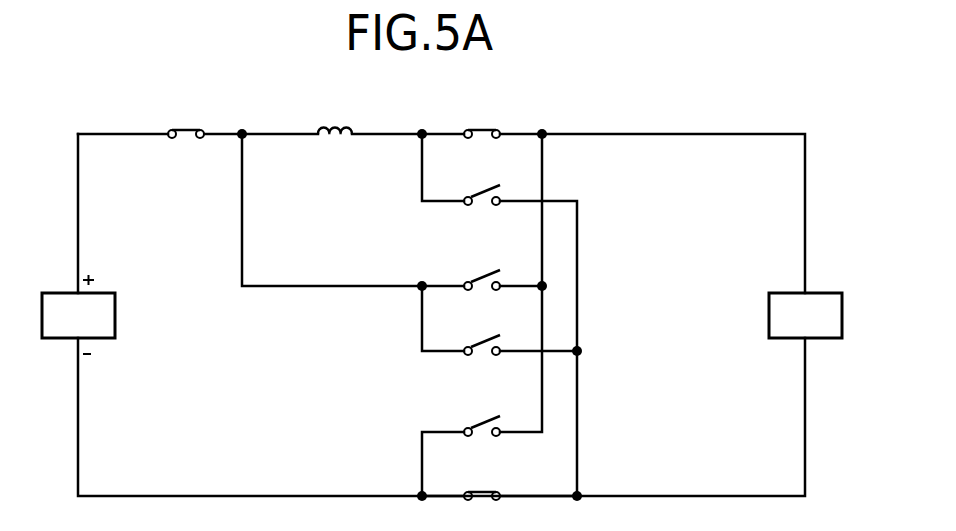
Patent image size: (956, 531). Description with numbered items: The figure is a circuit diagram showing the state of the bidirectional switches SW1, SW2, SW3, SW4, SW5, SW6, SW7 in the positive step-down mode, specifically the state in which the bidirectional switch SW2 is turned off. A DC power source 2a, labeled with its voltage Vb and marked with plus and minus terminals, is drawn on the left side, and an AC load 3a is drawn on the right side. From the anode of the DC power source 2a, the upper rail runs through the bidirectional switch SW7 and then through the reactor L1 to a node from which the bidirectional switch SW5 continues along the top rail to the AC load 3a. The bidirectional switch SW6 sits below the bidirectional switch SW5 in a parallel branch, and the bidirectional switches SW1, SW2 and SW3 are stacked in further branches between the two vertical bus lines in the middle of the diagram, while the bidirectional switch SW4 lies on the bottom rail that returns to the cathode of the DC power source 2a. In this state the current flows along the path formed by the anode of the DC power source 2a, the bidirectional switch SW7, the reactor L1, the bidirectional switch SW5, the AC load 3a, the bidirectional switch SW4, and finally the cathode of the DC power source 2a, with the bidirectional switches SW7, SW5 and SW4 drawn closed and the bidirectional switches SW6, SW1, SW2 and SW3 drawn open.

The DC power source 2a is at (68, 293).
The AC load 3a is at (815, 293).
The battery voltage Vb is at (96, 299).
The reactor L1 is at (335, 115).
The bidirectional switch SW1 is at (481, 269).
The bidirectional switch SW2 is at (481, 334).
The bidirectional switch SW3 is at (481, 414).
The bidirectional switch SW4 is at (481, 479).
The bidirectional switch SW5 is at (481, 117).
The bidirectional switch SW6 is at (481, 183).
The bidirectional switch SW7 is at (186, 117).